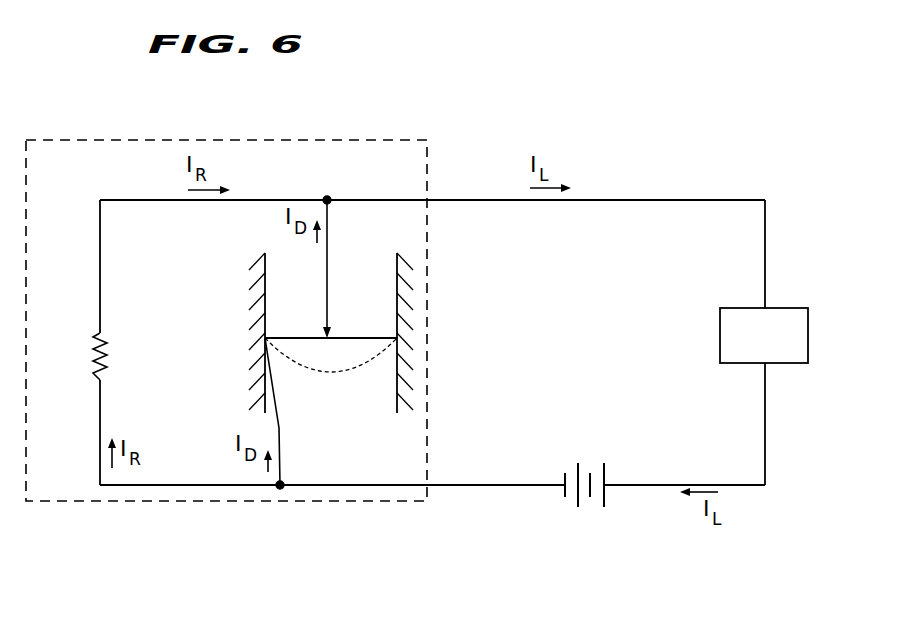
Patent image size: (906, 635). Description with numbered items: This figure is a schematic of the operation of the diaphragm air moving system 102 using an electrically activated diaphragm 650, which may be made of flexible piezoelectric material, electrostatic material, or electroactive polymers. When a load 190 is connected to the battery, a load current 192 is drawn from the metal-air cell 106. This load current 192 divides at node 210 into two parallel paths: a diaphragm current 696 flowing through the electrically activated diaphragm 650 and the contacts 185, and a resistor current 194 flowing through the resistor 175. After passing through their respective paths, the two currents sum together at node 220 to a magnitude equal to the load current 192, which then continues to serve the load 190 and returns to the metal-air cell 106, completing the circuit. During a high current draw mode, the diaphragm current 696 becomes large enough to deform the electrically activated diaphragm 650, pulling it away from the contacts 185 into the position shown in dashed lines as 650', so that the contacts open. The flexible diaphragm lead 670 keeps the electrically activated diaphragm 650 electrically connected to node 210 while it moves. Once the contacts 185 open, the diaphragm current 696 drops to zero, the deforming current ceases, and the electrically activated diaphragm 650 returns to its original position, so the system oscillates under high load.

The diaphragm air moving system 102 is at (394, 123).
The resistor current 194 is at (192, 190).
The node 220 is at (327, 199).
The load current 192 is at (536, 189).
The diaphragm current 696 is at (315, 241).
The contacts 185 is at (318, 337).
The electrically activated diaphragm 650 is at (331, 297).
The deformed diaphragm position 650' is at (331, 383).
The resistor 175 is at (112, 360).
The flexible diaphragm lead 670 is at (282, 460).
The node 210 is at (280, 496).
The load 190 is at (720, 340).
The metal-air cell 106 is at (580, 498).